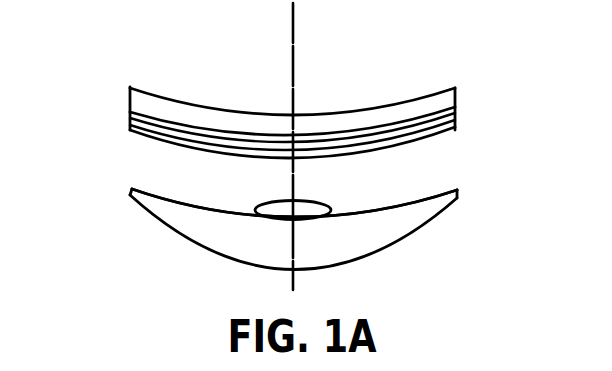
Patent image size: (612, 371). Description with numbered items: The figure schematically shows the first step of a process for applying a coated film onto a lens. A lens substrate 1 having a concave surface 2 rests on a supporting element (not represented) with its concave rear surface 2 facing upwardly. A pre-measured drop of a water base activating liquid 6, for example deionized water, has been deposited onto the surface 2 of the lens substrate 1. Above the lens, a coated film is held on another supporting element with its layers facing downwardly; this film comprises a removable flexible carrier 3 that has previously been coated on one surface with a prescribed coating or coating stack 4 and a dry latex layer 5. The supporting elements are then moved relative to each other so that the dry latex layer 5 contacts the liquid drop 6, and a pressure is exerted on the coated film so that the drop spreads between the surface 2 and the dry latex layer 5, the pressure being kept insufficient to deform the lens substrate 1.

The lens substrate 1 is at (433, 211).
The concave surface 2 is at (417, 195).
The removable flexible carrier 3 is at (455, 87).
The coating or coating stack 4 is at (458, 112).
The dry latex layer 5 is at (132, 128).
The water base activating liquid 6 is at (310, 200).